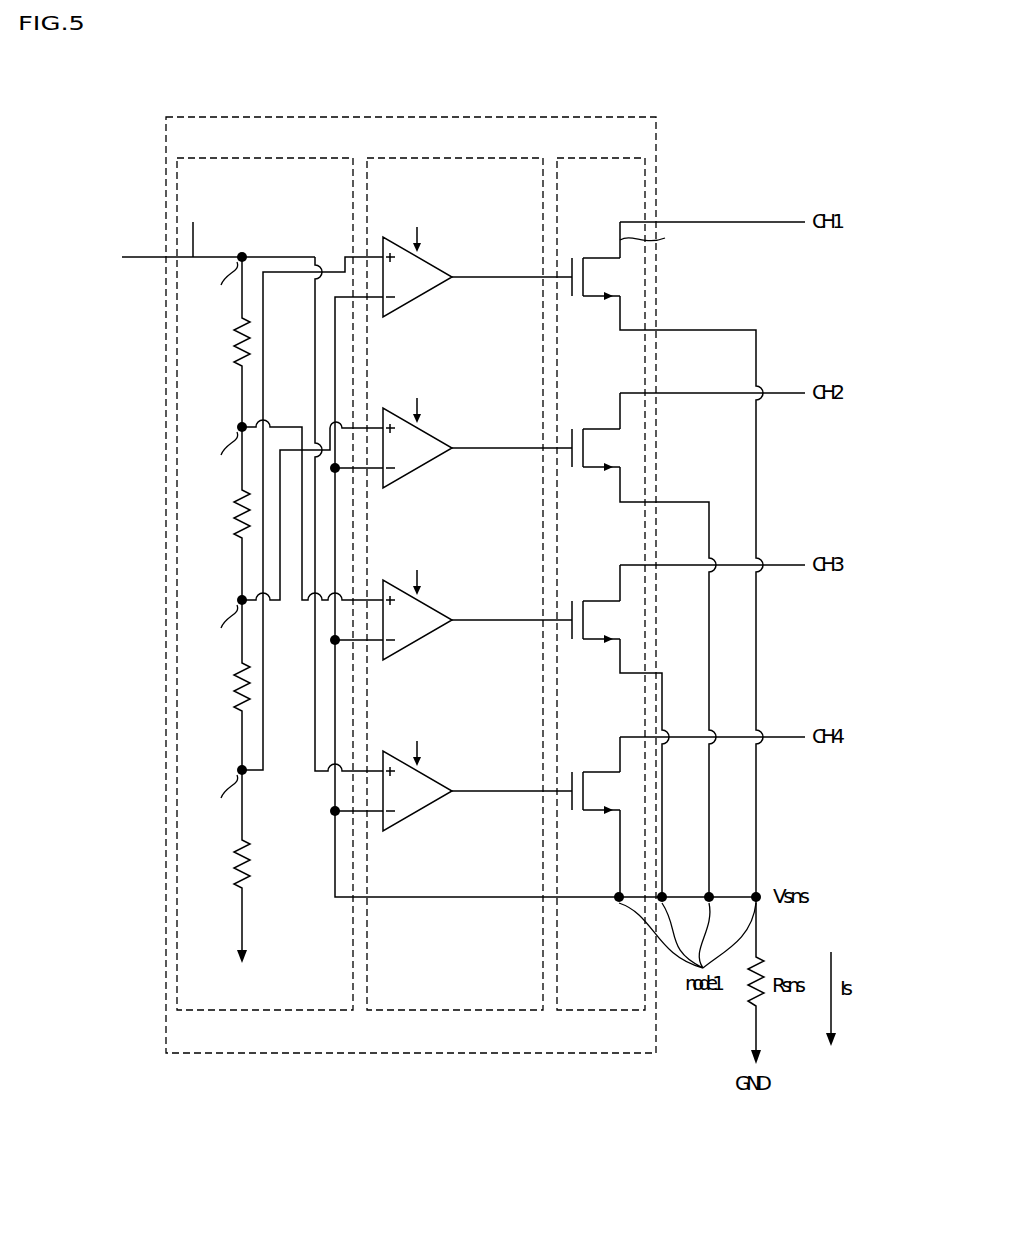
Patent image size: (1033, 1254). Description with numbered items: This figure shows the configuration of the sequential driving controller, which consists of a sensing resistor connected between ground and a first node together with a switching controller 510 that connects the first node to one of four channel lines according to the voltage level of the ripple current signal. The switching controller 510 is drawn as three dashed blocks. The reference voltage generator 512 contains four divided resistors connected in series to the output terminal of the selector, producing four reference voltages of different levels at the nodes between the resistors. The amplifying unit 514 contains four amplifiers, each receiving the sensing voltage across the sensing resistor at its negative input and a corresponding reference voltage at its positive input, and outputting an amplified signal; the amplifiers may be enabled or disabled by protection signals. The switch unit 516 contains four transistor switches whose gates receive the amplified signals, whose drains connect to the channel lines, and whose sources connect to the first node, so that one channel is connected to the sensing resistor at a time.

The switching controller 510 is at (657, 171).
The reference voltage generator 512 is at (266, 157).
The amplifying unit 514 is at (455, 157).
The switch unit 516 is at (601, 157).